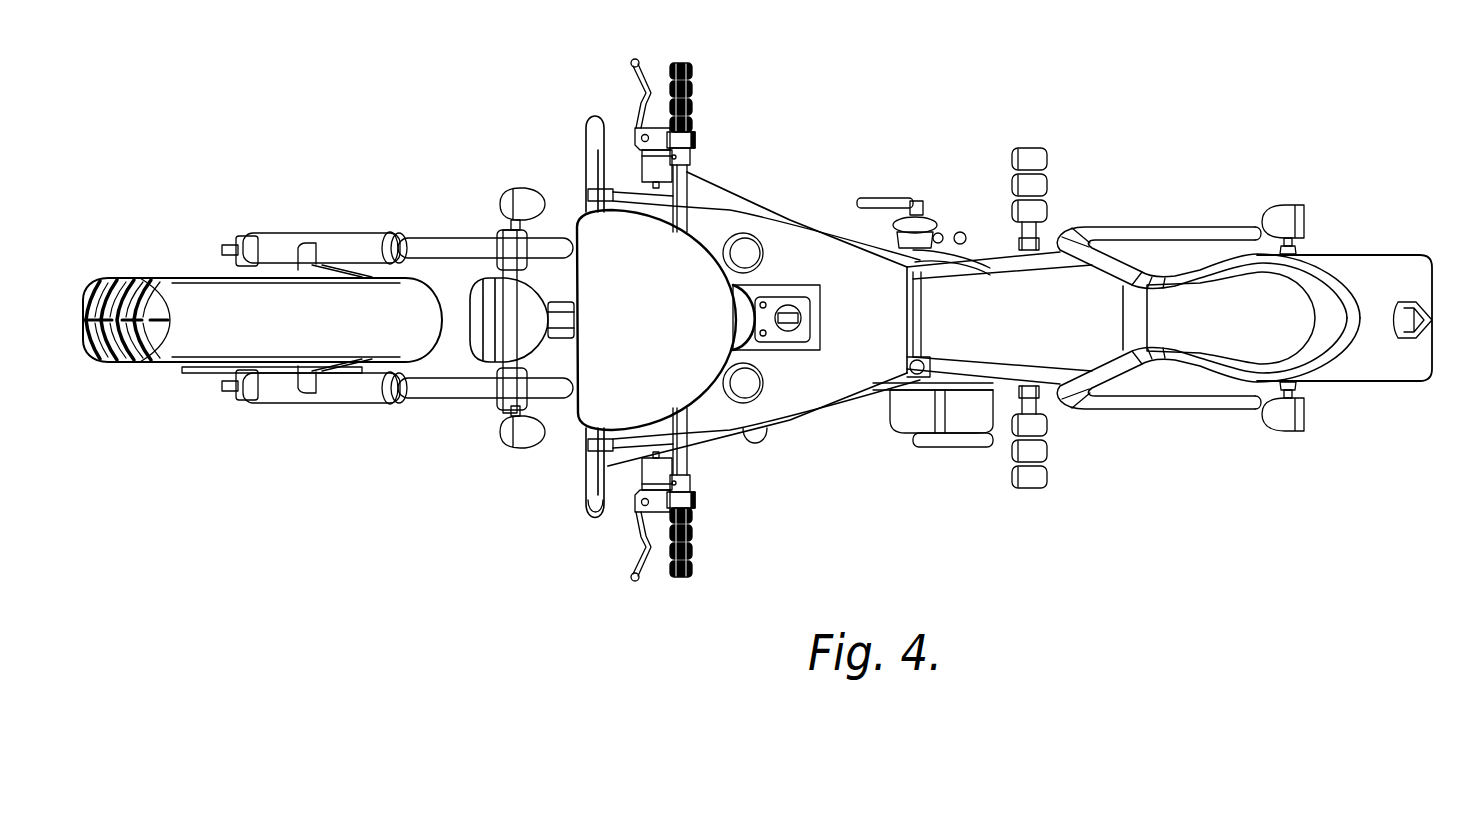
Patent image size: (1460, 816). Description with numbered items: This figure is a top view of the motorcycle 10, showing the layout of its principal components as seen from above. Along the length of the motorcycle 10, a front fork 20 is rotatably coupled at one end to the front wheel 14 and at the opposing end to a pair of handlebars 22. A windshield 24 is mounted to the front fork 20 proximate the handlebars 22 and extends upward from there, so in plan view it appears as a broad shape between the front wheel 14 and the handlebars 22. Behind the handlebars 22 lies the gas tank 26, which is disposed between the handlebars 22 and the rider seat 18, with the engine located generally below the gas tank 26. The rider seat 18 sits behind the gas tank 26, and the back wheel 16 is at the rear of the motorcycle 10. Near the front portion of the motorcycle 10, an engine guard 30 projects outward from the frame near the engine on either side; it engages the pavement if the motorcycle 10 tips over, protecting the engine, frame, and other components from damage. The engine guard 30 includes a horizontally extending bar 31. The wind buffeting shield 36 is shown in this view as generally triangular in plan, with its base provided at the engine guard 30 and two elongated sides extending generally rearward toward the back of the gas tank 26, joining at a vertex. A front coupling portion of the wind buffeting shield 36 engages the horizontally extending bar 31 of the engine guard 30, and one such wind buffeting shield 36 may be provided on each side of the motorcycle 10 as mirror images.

The motorcycle 10 is at (318, 98).
The front wheel 14 is at (139, 357).
The back wheel 16 is at (1365, 360).
The rider seat 18 is at (1075, 278).
The front fork 20 is at (347, 243).
The handlebars 22 is at (690, 118).
The windshield 24 is at (597, 225).
The gas tank 26 is at (808, 378).
The engine guard 30 is at (587, 510).
The horizontally extending bar 31 is at (597, 489).
The wind buffeting shield 36 is at (703, 436).